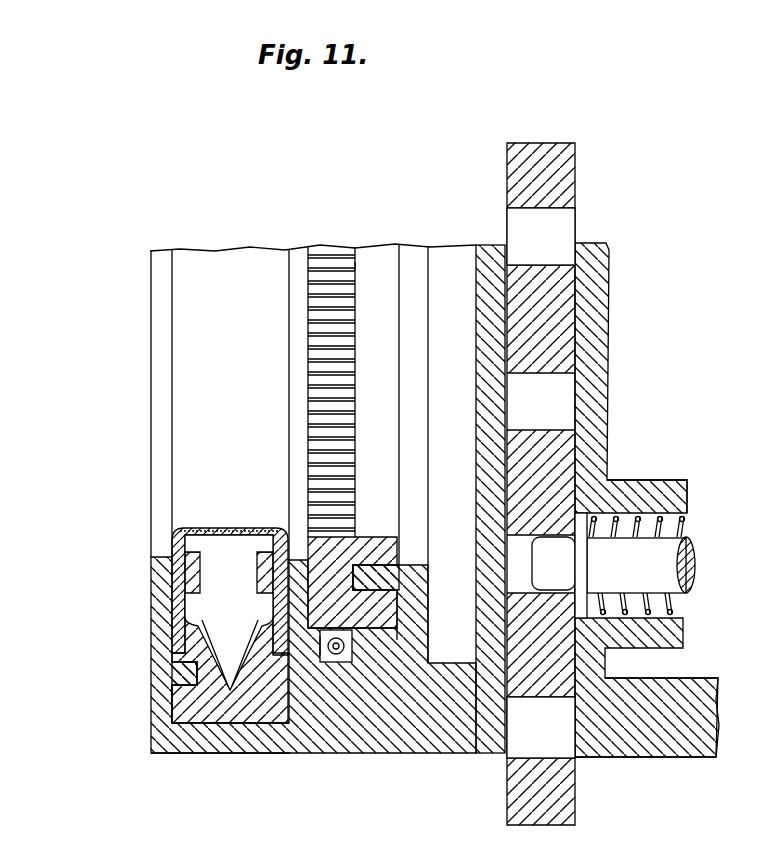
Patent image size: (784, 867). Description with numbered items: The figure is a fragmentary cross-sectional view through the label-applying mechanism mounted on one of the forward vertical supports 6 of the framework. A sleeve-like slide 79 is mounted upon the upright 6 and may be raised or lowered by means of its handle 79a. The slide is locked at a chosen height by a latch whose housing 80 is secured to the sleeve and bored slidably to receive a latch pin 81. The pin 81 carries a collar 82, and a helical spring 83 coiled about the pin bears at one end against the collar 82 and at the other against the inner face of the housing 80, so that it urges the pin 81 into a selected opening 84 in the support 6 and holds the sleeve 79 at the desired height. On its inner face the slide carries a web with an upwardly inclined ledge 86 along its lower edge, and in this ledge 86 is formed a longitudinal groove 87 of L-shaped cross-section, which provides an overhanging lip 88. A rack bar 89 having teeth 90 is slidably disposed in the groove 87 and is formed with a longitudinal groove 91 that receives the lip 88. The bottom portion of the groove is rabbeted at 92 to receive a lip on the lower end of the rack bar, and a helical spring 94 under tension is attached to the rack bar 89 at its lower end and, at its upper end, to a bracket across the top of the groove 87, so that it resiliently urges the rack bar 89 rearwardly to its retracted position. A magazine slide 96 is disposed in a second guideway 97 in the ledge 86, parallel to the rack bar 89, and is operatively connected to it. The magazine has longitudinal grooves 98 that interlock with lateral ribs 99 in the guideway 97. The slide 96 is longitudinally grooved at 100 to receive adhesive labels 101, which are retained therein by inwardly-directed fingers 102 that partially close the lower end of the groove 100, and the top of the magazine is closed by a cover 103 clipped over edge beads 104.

The forward vertical support 6 is at (562, 148).
The sleeve-like slide 79 is at (492, 258).
The handle 79a is at (692, 732).
The housing 80 is at (665, 498).
The latch pin 81 is at (737, 583).
The collar 82 is at (583, 560).
The helical spring 83 is at (652, 605).
The opening 84 is at (548, 240).
The ledge 86 is at (257, 755).
The longitudinal groove 87 is at (396, 632).
The overhanging lip 88 is at (372, 578).
The rack bar 89 is at (358, 268).
The teeth 90 is at (328, 268).
The longitudinal groove 91 is at (363, 564).
The rabbet 92 is at (320, 640).
The helical spring 94 is at (341, 653).
The magazine slide 96 is at (197, 724).
The second guideway 97 is at (182, 755).
The longitudinal grooves 98 is at (168, 698).
The lateral ribs 99 is at (176, 672).
The longitudinal groove 100 is at (168, 653).
The adhesive labels 101 is at (226, 552).
The inwardly-directed fingers 102 is at (190, 610).
The cover 103 is at (199, 528).
The edge beads 104 is at (172, 542).